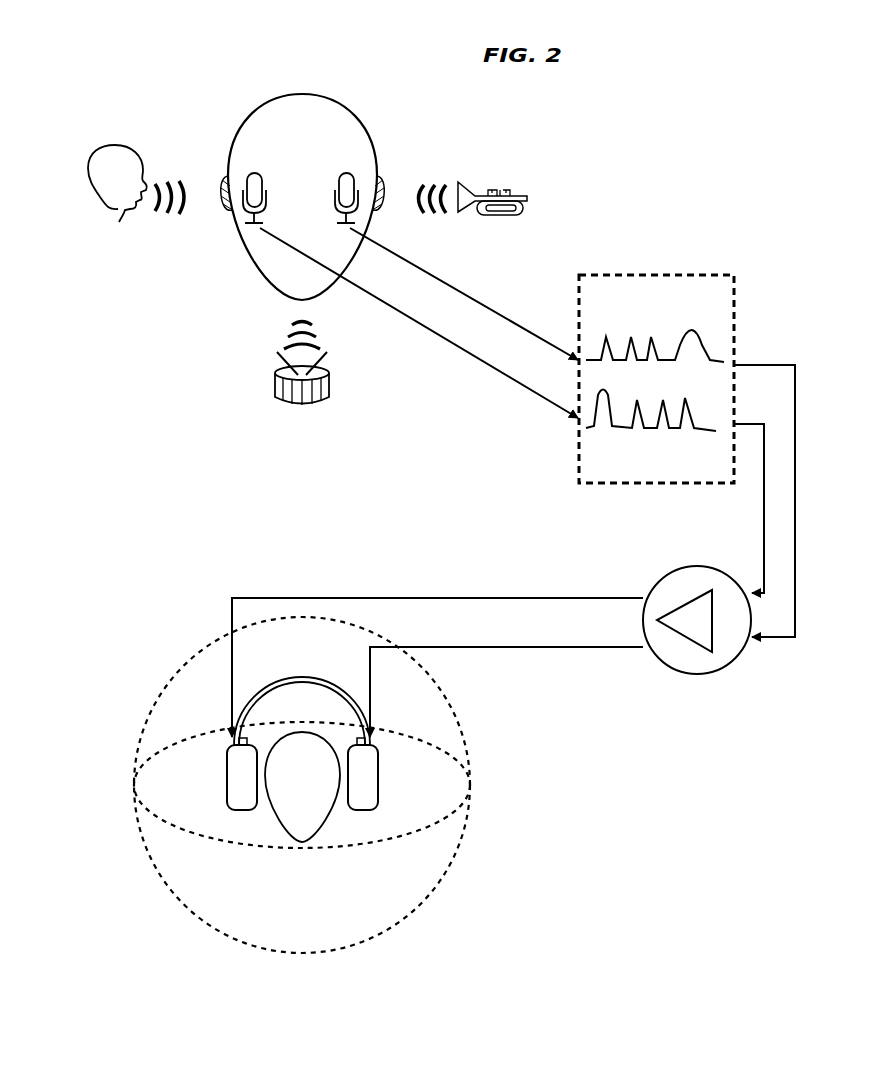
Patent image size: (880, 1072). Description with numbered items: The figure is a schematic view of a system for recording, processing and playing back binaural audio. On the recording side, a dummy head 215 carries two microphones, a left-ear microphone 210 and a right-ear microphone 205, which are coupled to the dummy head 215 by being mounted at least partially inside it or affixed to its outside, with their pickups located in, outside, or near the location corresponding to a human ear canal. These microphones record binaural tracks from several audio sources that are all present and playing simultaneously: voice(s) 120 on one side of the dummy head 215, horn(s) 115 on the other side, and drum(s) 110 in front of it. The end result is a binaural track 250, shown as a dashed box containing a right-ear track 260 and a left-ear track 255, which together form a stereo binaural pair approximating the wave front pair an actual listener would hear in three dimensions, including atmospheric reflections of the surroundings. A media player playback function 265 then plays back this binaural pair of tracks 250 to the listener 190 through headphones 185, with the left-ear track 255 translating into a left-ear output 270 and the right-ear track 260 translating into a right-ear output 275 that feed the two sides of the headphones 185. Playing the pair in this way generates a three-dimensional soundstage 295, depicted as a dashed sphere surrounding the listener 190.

The voice(s) 120 is at (129, 163).
The dummy head 215 is at (302, 182).
The left-ear microphone 210 is at (267, 173).
The right-ear microphone 205 is at (334, 173).
The horn(s) 115 is at (481, 182).
The drum(s) 110 is at (300, 377).
The binaural track 250 is at (656, 351).
The right-ear track 260 is at (655, 327).
The left-ear track 255 is at (650, 423).
The media player playback function 265 is at (695, 607).
The left-ear output 270 is at (437, 652).
The right-ear output 275 is at (506, 692).
The headphones 185 is at (302, 717).
The listener 190 is at (302, 787).
The three-dimensional soundstage 295 is at (302, 785).